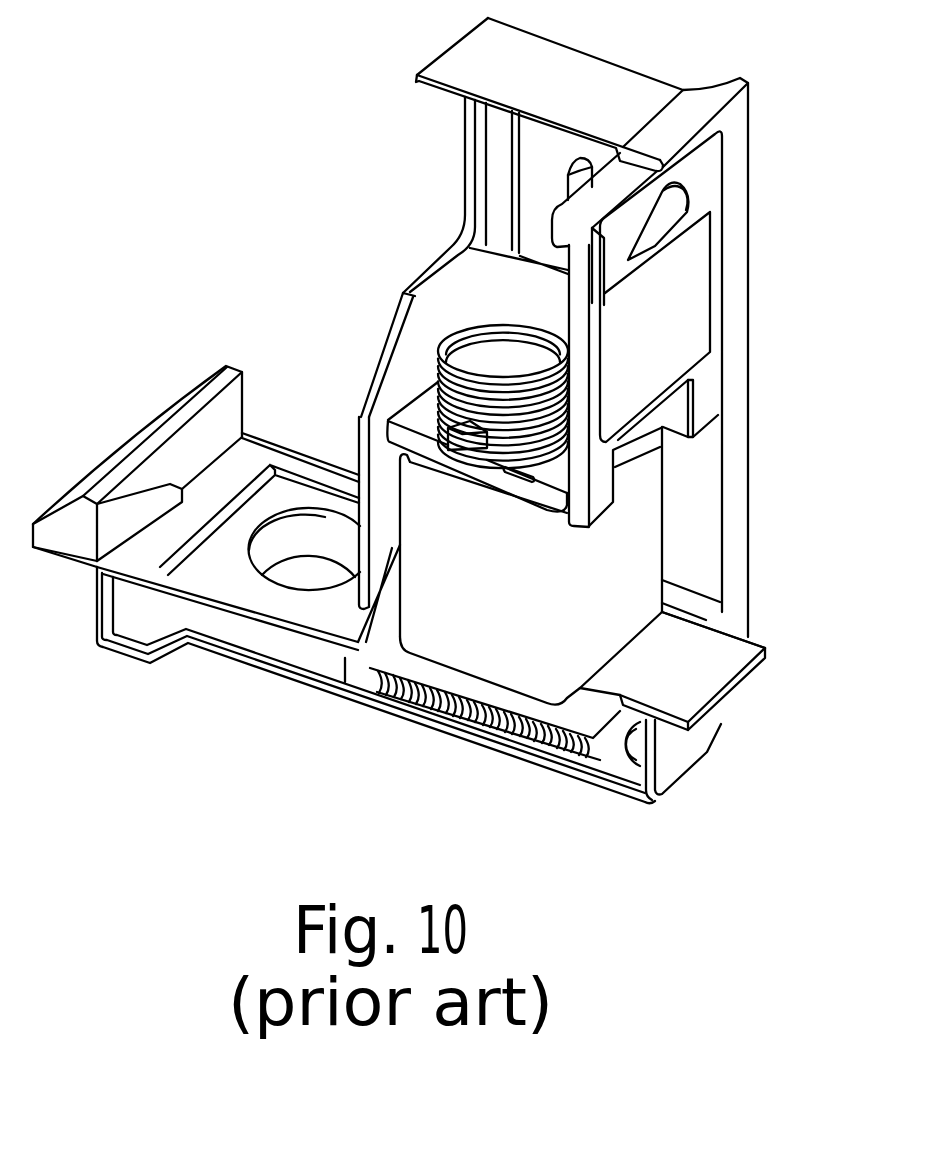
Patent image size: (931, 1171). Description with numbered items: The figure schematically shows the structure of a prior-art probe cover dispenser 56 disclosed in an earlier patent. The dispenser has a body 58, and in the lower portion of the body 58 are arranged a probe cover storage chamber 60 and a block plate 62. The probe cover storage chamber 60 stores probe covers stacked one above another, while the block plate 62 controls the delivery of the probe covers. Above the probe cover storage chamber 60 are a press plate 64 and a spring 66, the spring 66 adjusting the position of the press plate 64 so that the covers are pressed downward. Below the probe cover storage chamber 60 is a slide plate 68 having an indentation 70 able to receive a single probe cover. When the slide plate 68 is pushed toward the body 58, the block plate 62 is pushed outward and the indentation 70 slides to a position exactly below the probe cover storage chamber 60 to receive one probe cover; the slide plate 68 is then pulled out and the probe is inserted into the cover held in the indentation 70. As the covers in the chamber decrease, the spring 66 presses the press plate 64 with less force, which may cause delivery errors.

The prior-art probe cover dispenser 56 is at (206, 53).
The body 58 is at (732, 375).
The probe cover storage chamber 60 is at (455, 632).
The block plate 62 is at (733, 658).
The press plate 64 is at (408, 423).
The spring 66 is at (466, 328).
The slide plate 68 is at (260, 458).
The indentation 70 is at (330, 527).